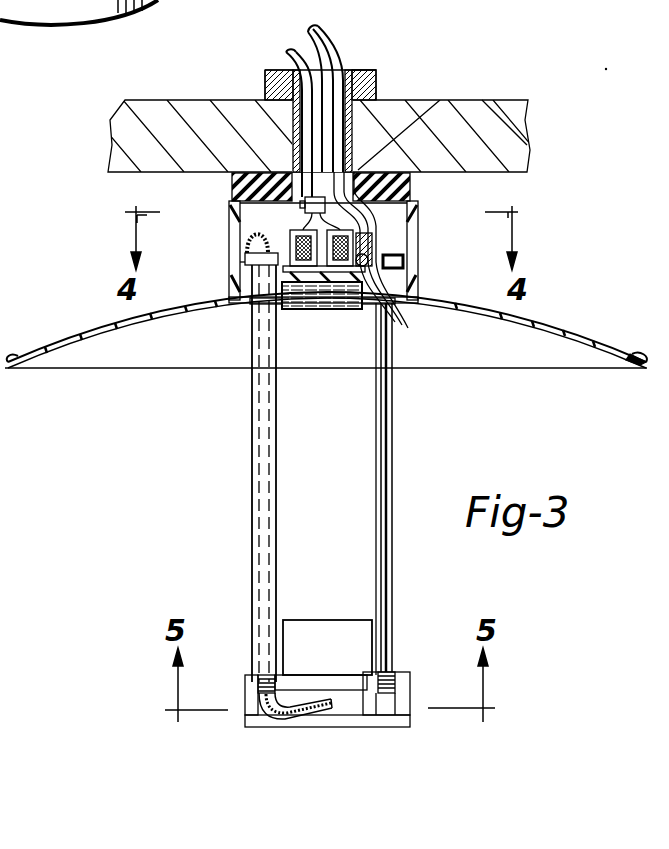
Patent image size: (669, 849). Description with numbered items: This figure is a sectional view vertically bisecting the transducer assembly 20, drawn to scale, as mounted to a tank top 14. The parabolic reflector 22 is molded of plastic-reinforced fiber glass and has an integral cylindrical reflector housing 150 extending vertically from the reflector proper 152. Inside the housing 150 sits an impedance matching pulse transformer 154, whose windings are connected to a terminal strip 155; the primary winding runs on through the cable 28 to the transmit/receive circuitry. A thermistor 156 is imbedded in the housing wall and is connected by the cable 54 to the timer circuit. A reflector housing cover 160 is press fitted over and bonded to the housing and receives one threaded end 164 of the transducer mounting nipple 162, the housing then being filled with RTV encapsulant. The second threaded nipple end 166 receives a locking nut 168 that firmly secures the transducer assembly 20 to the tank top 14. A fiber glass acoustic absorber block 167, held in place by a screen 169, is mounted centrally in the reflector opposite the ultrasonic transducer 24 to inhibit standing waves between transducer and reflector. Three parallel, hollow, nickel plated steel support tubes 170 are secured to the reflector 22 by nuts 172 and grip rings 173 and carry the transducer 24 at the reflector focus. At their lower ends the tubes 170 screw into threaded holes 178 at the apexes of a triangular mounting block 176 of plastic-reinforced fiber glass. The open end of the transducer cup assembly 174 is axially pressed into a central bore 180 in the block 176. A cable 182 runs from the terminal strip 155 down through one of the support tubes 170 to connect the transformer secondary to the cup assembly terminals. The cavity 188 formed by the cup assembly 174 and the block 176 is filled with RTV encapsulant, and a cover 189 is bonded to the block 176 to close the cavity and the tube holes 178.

The tank top 14 is at (526, 112).
The transducer assembly 20 is at (115, 251).
The parabolic reflector 22 is at (574, 333).
The ultrasonic transducer 24 is at (145, 740).
The cable 28 is at (282, 52).
The cable 54 is at (314, 36).
The reflector housing 150 is at (418, 278).
The reflector proper 152 is at (113, 366).
The pulse transformer 154 is at (247, 232).
The terminal strip 155 is at (405, 322).
The thermistor 156 is at (403, 244).
The reflector housing cover 160 is at (446, 174).
The transducer mounting nipple 162 is at (358, 125).
The threaded end 164 is at (510, 120).
The second threaded nipple end 166 is at (355, 100).
The acoustic absorber block 167 is at (284, 310).
The locking nut 168 is at (375, 75).
The screen 169 is at (347, 310).
The support tubes 170 is at (377, 490).
The nuts 172 is at (247, 270).
The grip rings 173 is at (247, 305).
The transducer cup assembly 174 is at (363, 583).
The mounting block 176 is at (390, 670).
The threaded holes 178 is at (387, 708).
The central bore 180 is at (348, 712).
The cable 182 is at (250, 248).
The cavity 188 is at (343, 705).
The cover 189 is at (410, 725).